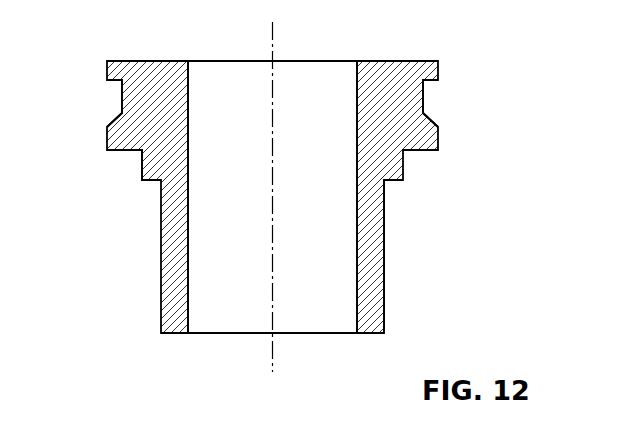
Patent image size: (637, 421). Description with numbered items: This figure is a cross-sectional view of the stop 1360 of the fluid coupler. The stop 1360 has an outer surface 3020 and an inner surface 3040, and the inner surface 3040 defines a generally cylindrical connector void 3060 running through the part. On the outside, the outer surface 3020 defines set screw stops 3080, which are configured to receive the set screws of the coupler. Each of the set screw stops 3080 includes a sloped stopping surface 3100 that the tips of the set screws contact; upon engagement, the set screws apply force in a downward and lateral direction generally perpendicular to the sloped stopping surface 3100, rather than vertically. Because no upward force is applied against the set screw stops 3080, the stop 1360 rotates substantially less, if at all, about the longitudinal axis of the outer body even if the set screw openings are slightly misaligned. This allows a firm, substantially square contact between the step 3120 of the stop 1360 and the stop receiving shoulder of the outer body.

The stop 1360 is at (280, 206).
The outer surface 3020 is at (384, 285).
The inner surface 3040 is at (188, 88).
The connector void 3060 is at (223, 319).
The set screw stops 3080 is at (115, 99).
The sloped stopping surface 3100 is at (433, 117).
The step 3120 is at (142, 165).